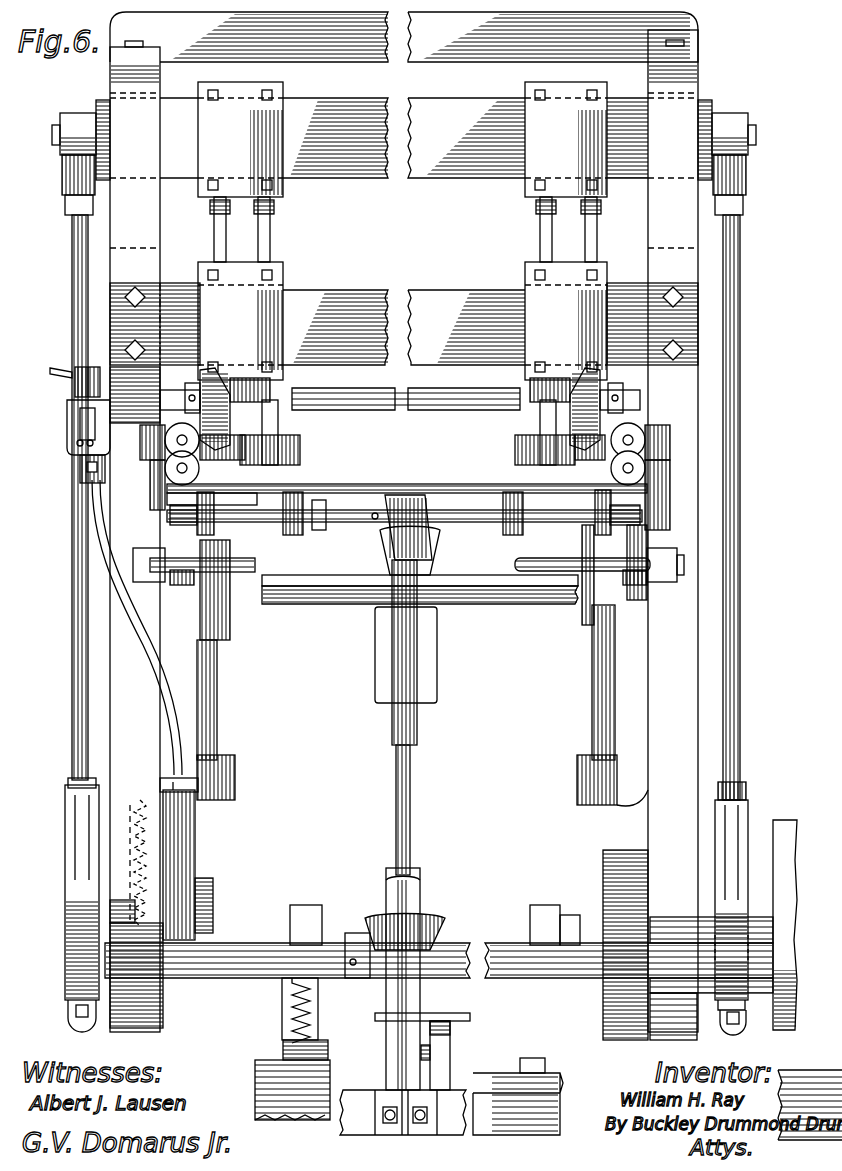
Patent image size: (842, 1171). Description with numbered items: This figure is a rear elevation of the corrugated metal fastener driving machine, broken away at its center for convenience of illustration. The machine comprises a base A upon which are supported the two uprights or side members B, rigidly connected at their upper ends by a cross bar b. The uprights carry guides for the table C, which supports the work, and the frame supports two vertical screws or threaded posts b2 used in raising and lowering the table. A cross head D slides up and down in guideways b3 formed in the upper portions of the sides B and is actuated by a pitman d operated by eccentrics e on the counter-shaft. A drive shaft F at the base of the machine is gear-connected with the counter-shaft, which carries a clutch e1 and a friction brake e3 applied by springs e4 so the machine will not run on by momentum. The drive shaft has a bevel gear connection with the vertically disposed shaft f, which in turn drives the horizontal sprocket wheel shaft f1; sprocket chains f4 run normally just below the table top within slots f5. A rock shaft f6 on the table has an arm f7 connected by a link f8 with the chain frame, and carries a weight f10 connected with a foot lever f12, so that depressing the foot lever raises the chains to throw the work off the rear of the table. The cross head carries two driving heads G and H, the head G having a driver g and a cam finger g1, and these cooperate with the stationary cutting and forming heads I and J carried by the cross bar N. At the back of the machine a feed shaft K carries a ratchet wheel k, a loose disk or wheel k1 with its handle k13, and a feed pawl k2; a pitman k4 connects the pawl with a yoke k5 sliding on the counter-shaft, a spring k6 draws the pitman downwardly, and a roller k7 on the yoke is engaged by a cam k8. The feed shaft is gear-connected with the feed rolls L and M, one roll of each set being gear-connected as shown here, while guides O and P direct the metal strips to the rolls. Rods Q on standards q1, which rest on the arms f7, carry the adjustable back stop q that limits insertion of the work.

The cross bar b is at (495, 55).
The vertical screws or threaded posts b2 is at (215, 712).
The guideways b3 is at (132, 248).
The pitman d is at (75, 292).
The driving head H is at (280, 135).
The driving head G is at (592, 125).
The cross head D is at (488, 160).
The driver g is at (272, 240).
The cam finger g1 is at (218, 245).
The cutting and forming head J is at (285, 300).
The forming and cutting head I is at (522, 300).
The cross bar N is at (372, 290).
The feed shaft K is at (456, 405).
The feed roll L is at (262, 430).
The feed roll M is at (575, 420).
The ratchet wheel k is at (97, 380).
The rotatable disk or wheel k1 is at (72, 375).
The feed pawl k2 is at (72, 410).
The handle k13 is at (50, 370).
The rods Q is at (182, 468).
The standards q1 is at (150, 470).
The back stop or abutment q is at (372, 485).
The guide O is at (295, 505).
The guide P is at (520, 470).
The table C is at (428, 500).
The vertically disposed shaft f is at (410, 830).
The sprocket wheel shaft f1 is at (340, 510).
The sprocket chains f4 is at (280, 560).
The slots f5 is at (320, 495).
The rock shaft f6 is at (340, 600).
The arm f7 is at (150, 562).
The link f8 is at (145, 578).
The weight f10 is at (430, 660).
The foot lever f12 is at (462, 1022).
The uprights or side members B is at (120, 680).
The pitman k4 is at (150, 670).
The yoke k5 is at (178, 860).
The spring k6 is at (128, 810).
The roller or projection k7 is at (195, 878).
The cam k8 is at (213, 915).
The eccentrics e is at (70, 912).
The clutch e1 is at (546, 915).
The friction brake e3 is at (305, 915).
The springs e4 is at (250, 1025).
The drive shaft F is at (248, 980).
The base A is at (352, 1100).